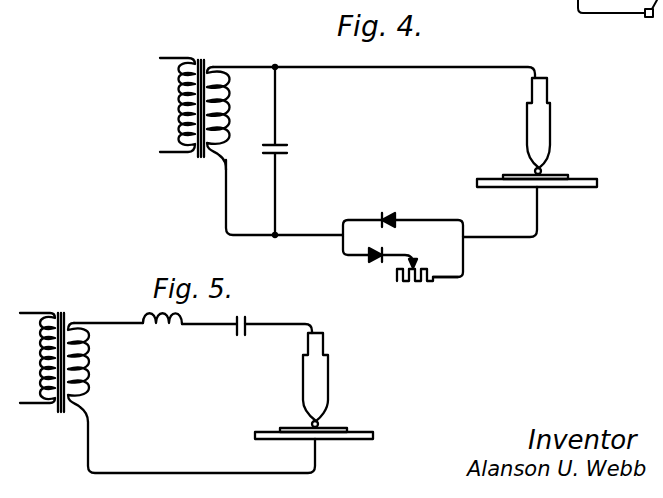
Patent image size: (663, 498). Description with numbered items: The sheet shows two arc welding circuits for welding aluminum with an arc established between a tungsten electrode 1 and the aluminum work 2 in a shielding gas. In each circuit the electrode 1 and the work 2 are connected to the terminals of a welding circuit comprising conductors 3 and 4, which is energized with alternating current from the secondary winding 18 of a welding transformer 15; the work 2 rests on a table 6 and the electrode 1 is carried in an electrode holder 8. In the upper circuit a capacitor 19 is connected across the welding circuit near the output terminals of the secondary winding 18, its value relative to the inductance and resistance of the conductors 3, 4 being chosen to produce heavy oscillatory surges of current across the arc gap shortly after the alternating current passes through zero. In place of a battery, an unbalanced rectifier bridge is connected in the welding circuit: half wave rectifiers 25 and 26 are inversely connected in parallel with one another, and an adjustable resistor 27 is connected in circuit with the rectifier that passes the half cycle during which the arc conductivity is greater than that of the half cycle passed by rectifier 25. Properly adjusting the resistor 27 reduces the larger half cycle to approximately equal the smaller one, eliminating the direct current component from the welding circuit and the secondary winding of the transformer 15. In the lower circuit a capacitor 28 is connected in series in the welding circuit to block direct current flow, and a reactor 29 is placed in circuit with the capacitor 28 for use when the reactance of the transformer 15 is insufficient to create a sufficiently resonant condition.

In FIG. 4, the tungsten electrode 1 is at (542, 170).
In FIG. 5, the tungsten electrode 1 is at (320, 423).
In FIG. 4, the aluminum work 2 is at (566, 177).
In FIG. 5, the aluminum work 2 is at (345, 430).
In FIG. 4, the conductor 3 is at (430, 72).
In FIG. 5, the conductor 3 is at (101, 323).
In FIG. 4, the conductor 4 is at (304, 238).
In FIG. 5, the conductor 4 is at (151, 472).
In FIG. 4, the work table 6 is at (584, 188).
In FIG. 5, the work table 6 is at (372, 440).
In FIG. 4, the electrode holder 8 is at (572, 123).
In FIG. 5, the electrode holder 8 is at (344, 376).
In FIG. 4, the welding transformer 15 is at (208, 52).
In FIG. 5, the welding transformer 15 is at (69, 310).
In FIG. 4, the secondary winding 18 is at (222, 108).
In FIG. 5, the secondary winding 18 is at (84, 378).
In FIG. 4, the capacitor 19 is at (286, 148).
In FIG. 4, the half wave rectifier 25 is at (387, 213).
In FIG. 4, the half wave rectifier 26 is at (380, 259).
In FIG. 4, the adjustable resistor 27 is at (422, 282).
In FIG. 5, the capacitor 28 is at (240, 336).
In FIG. 5, the reactor 29 is at (170, 328).